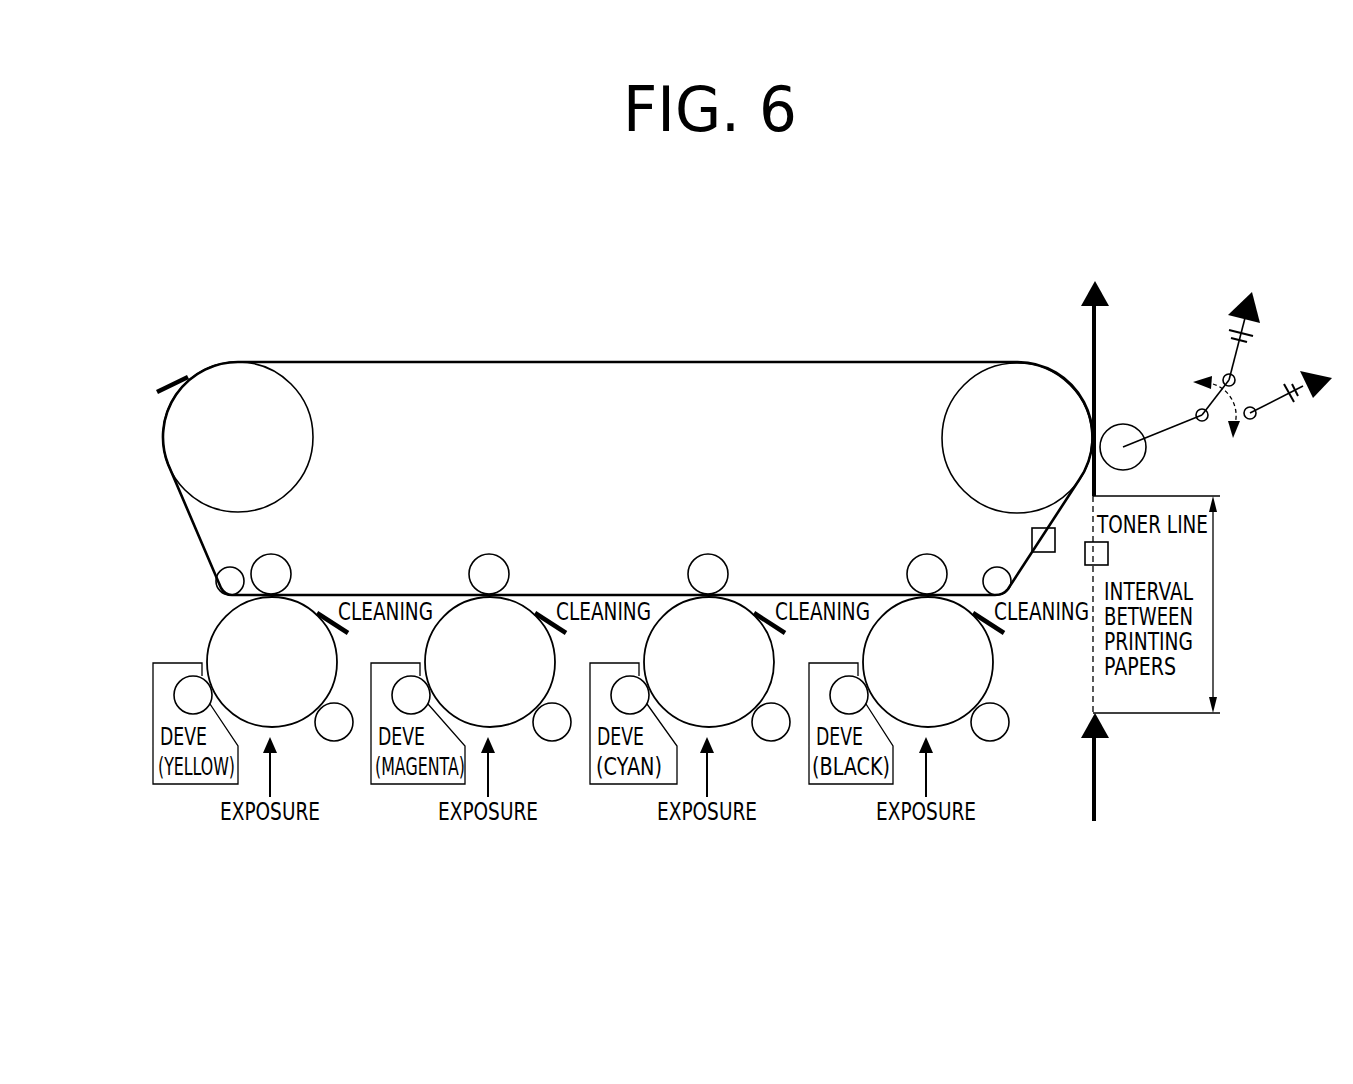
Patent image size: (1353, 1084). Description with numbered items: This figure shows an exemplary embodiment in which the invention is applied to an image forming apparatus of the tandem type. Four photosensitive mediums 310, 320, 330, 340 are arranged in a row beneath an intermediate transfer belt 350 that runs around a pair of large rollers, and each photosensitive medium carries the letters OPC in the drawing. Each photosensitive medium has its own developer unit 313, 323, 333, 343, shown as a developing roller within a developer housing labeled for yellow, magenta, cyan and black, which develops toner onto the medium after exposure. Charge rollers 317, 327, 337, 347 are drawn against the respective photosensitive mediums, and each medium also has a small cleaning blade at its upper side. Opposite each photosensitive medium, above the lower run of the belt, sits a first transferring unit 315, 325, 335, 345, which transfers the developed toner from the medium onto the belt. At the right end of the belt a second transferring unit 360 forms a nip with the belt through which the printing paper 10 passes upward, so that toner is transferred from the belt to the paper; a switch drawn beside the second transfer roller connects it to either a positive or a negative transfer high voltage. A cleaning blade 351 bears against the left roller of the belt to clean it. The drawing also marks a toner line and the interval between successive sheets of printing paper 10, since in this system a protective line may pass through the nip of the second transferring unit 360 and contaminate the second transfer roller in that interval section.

The printing paper 10 is at (1097, 322).
The intermediate transfer belt (ITB) 350 is at (826, 361).
The cleaning blade 351 is at (188, 373).
The second transferring unit 360 is at (1134, 428).
The photosensitive medium 310 is at (299, 724).
The developer unit 313 is at (180, 678).
The first transferring unit 315 is at (291, 574).
The yellow charge roller 317 is at (335, 741).
The photosensitive medium 320 is at (517, 724).
The developer unit 323 is at (398, 678).
The first transferring unit 325 is at (509, 574).
The magenta charge roller 327 is at (553, 741).
The photosensitive medium 330 is at (736, 724).
The developer unit 333 is at (617, 678).
The first transferring unit 335 is at (728, 574).
The cyan charge roller 337 is at (772, 741).
The photosensitive medium 340 is at (955, 724).
The developer unit 343 is at (836, 678).
The first transferring unit 345 is at (907, 574).
The black charge roller 347 is at (991, 741).